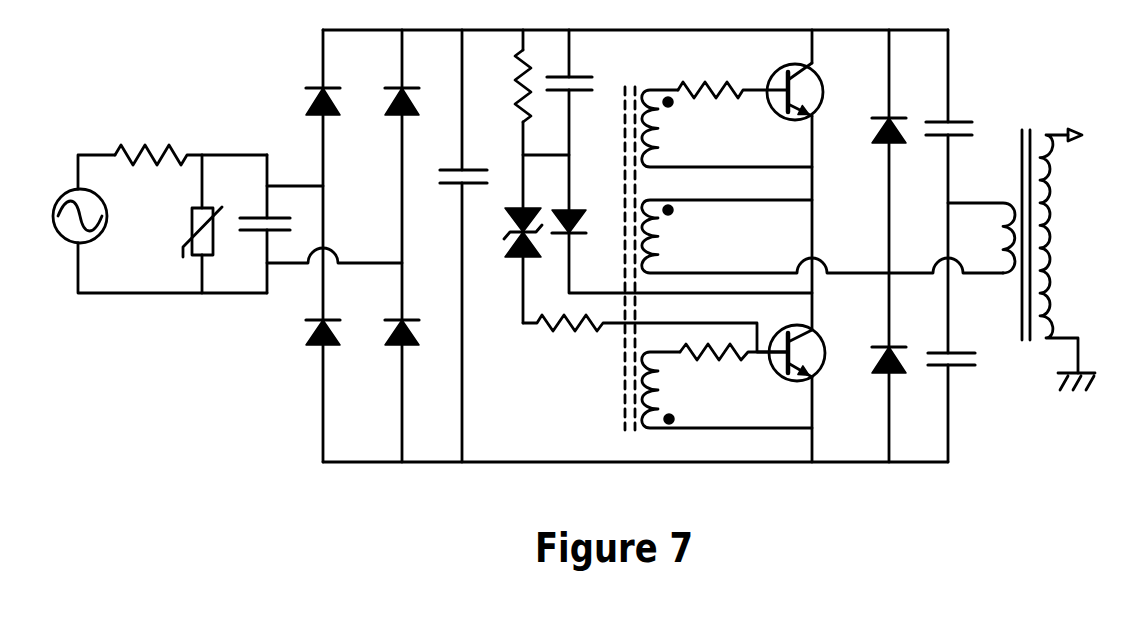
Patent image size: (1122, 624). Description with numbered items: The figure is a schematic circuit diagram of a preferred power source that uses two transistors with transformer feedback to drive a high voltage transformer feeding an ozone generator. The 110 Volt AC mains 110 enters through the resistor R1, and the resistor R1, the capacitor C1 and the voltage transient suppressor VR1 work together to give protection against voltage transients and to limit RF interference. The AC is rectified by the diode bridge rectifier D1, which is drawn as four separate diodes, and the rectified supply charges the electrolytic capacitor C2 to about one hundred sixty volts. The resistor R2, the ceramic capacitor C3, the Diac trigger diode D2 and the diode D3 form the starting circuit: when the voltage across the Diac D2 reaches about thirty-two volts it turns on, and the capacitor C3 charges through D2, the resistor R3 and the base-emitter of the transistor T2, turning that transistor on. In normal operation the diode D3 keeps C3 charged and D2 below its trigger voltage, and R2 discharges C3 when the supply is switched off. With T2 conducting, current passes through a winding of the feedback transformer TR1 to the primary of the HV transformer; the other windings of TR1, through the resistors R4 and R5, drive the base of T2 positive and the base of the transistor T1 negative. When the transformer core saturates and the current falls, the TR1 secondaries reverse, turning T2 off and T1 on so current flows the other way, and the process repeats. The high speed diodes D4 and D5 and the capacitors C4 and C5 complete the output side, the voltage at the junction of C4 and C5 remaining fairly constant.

The 110 Volt AC supply 110 is at (160, 241).
The resistor R1 is at (191, 143).
The voltage transient suppressor VR1 is at (184, 224).
The capacitor C1 is at (259, 224).
The diode bridge rectifier D1 is at (353, 219).
The electrolytic capacitor C2 is at (455, 194).
The resistor R2 is at (504, 86).
The ceramic capacitor C3 is at (577, 68).
The Diac trigger diode D2 is at (514, 248).
The diode D3 is at (578, 239).
The resistor R3 is at (655, 339).
The feedback transformer TR1 is at (810, 244).
The resistor R4 is at (733, 106).
The resistor R5 is at (734, 367).
The transistor T1 is at (808, 85).
The transistor T2 is at (932, 256).
The high speed diode D4 is at (877, 146).
The high speed diode D5 is at (877, 347).
The metalized Mylar/Poly capacitor C4 is at (954, 113).
The metalized Mylar/Poly capacitor C5 is at (958, 377).